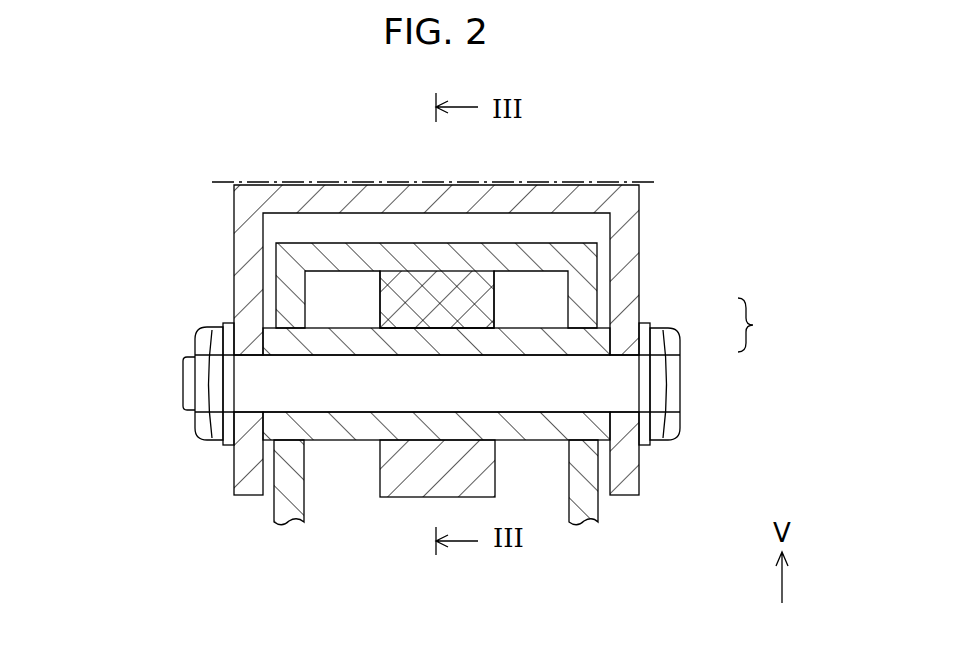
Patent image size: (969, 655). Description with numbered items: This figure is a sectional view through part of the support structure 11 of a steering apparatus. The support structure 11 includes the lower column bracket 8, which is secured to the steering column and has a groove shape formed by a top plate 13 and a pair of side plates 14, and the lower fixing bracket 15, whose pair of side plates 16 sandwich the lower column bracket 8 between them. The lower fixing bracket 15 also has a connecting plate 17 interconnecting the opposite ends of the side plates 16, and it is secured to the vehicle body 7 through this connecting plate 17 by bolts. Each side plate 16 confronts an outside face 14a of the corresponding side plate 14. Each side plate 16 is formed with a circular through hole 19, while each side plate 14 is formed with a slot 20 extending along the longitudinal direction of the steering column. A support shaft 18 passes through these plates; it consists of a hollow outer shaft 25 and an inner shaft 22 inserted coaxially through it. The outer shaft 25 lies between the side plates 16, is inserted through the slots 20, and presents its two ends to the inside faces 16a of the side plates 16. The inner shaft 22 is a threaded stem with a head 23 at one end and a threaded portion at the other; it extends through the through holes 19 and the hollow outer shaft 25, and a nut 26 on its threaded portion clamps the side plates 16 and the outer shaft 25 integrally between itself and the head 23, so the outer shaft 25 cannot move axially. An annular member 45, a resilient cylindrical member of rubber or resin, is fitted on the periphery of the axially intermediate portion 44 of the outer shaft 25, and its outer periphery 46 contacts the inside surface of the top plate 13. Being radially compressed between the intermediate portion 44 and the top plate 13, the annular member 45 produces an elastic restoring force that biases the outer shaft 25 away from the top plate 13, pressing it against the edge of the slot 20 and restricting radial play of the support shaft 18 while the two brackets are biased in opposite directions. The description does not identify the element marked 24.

The vehicle body 7 is at (643, 182).
The lower column bracket 8 is at (563, 510).
The support structure 11 is at (692, 200).
The top plate 13 is at (541, 248).
The side plates 14 is at (275, 508).
The outside face 14a is at (277, 502).
The lower fixing bracket 15 is at (654, 259).
The side plates 16 is at (240, 456).
The inside faces 16a is at (270, 264).
The connecting plate 17 is at (477, 197).
The support shaft 18 is at (695, 388).
The through hole 19 is at (236, 400).
The slot 20 is at (298, 357).
The inner shaft 22 is at (767, 325).
The head 23 is at (663, 372).
The bolt collar 24 is at (655, 332).
The outer shaft 25 is at (328, 325).
The nut 26 is at (205, 383).
The axially intermediate portion 44 is at (360, 340).
The annular member 45 is at (384, 472).
The outer periphery 46 is at (428, 270).